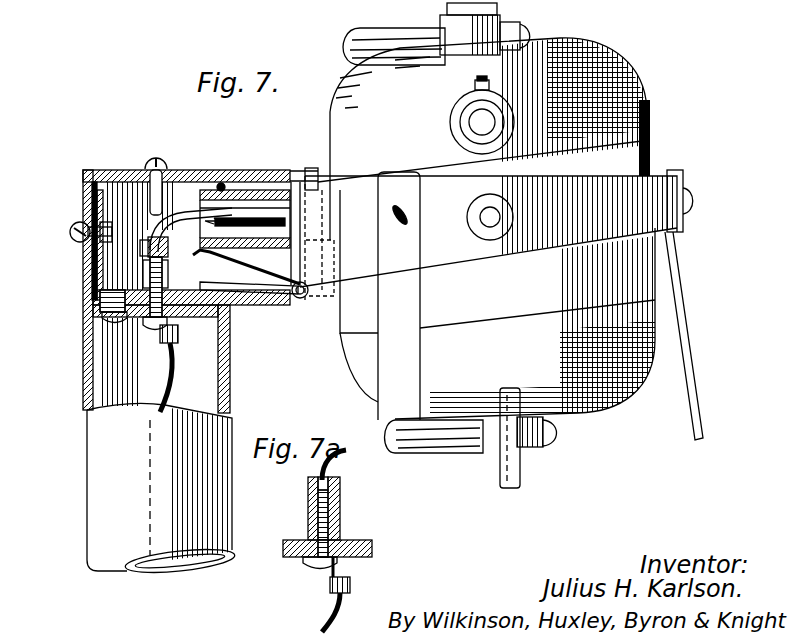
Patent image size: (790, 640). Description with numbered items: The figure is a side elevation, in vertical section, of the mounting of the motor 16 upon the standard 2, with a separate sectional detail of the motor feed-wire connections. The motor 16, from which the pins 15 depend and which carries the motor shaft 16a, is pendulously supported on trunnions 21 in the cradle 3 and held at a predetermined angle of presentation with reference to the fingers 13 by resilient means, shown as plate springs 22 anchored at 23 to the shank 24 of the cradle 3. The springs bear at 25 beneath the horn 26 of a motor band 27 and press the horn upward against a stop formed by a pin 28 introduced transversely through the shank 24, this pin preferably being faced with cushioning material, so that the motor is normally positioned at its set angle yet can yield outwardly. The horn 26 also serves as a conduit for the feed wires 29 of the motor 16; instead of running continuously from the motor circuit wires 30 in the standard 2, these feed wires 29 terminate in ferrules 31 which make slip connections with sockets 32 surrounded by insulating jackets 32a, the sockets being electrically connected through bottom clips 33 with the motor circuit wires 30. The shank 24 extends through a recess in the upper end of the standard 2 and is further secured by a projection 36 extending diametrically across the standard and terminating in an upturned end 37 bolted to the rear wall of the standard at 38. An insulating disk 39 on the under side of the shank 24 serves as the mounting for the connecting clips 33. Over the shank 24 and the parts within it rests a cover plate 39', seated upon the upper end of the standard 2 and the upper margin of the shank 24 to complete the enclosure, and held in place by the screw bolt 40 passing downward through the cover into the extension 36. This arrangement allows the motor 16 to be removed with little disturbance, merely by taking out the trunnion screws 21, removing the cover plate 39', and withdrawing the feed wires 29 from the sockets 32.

In FIG. 7, the standard 2 is at (93, 446).
In FIG. 7, the cradle 3 is at (370, 222).
In FIG. 7, the fingers 13 is at (388, 352).
In FIG. 7, the pins 15 is at (500, 422).
In FIG. 7, the motor 16 is at (488, 211).
In FIG. 7, the motor shaft 16a is at (530, 463).
In FIG. 7, the trunnions 21 is at (494, 205).
In FIG. 7, the plate springs 22 is at (268, 297).
In FIG. 7, the anchorage 23 is at (205, 284).
In FIG. 7, the shank 24 is at (224, 183).
In FIG. 7, the bearing point 25 is at (250, 231).
In FIG. 7, the horn 26 is at (291, 172).
In FIG. 7, the motor band 27 is at (342, 170).
In FIG. 7, the pin 28 is at (248, 188).
In FIG. 7, the feed wires 29 is at (188, 208).
In FIG. 7A, the feed wires 29 is at (348, 458).
In FIG. 7, the motor circuit wires 30 is at (165, 367).
In FIG. 7A, the motor circuit wires 30 is at (346, 606).
In FIG. 7, the ferrules 31 is at (146, 250).
In FIG. 7A, the ferrules 31 is at (341, 502).
In FIG. 7, the sockets 32 is at (137, 294).
In FIG. 7A, the sockets 32 is at (341, 525).
In FIG. 7, the insulating jackets 32a is at (170, 249).
In FIG. 7A, the insulating jackets 32a is at (308, 506).
In FIG. 7, the bottom clips 33 is at (145, 323).
In FIG. 7A, the bottom clips 33 is at (313, 566).
In FIG. 7, the projection 36 is at (92, 300).
In FIG. 7, the upturned end 37 is at (90, 268).
In FIG. 7, the bolt 38 is at (79, 226).
In FIG. 7, the insulating disk 39 is at (191, 351).
In FIG. 7A, the insulating disk 39 is at (342, 549).
In FIG. 7, the cover plate 39' is at (200, 277).
In FIG. 7, the screw bolt 40 is at (150, 168).